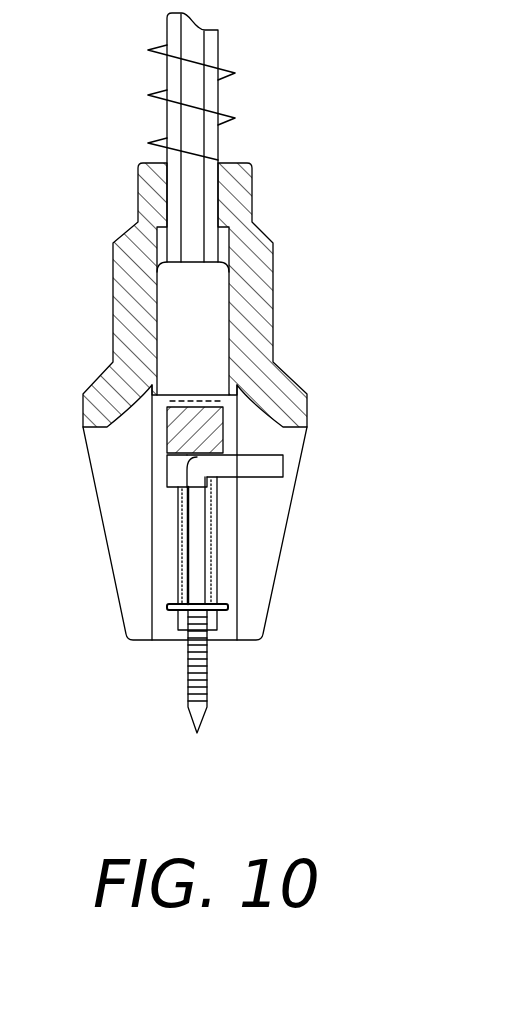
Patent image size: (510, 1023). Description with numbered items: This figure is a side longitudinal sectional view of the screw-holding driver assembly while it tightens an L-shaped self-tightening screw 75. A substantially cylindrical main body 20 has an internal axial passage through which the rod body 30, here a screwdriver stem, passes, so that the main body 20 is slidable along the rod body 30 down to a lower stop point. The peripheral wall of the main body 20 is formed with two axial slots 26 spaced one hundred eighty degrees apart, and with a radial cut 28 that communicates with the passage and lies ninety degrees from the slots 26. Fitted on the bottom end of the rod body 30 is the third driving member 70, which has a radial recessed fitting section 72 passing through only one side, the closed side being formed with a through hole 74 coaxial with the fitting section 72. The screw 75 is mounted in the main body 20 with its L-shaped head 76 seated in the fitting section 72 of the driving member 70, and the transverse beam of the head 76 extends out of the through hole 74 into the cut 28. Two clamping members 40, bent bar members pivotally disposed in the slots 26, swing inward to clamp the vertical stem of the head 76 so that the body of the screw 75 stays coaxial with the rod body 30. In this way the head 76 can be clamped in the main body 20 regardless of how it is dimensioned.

The main body 20 is at (285, 233).
The rod body 30 is at (195, 90).
The third driving member 70 is at (213, 432).
The fitting section 72 is at (167, 465).
The through hole 74 is at (222, 480).
The radial cut 28 is at (267, 528).
The L-shaped head 76 is at (197, 535).
The clamping members 40 is at (180, 561).
The slots 26 is at (178, 596).
The L-shaped self-tightening screw 75 is at (208, 685).